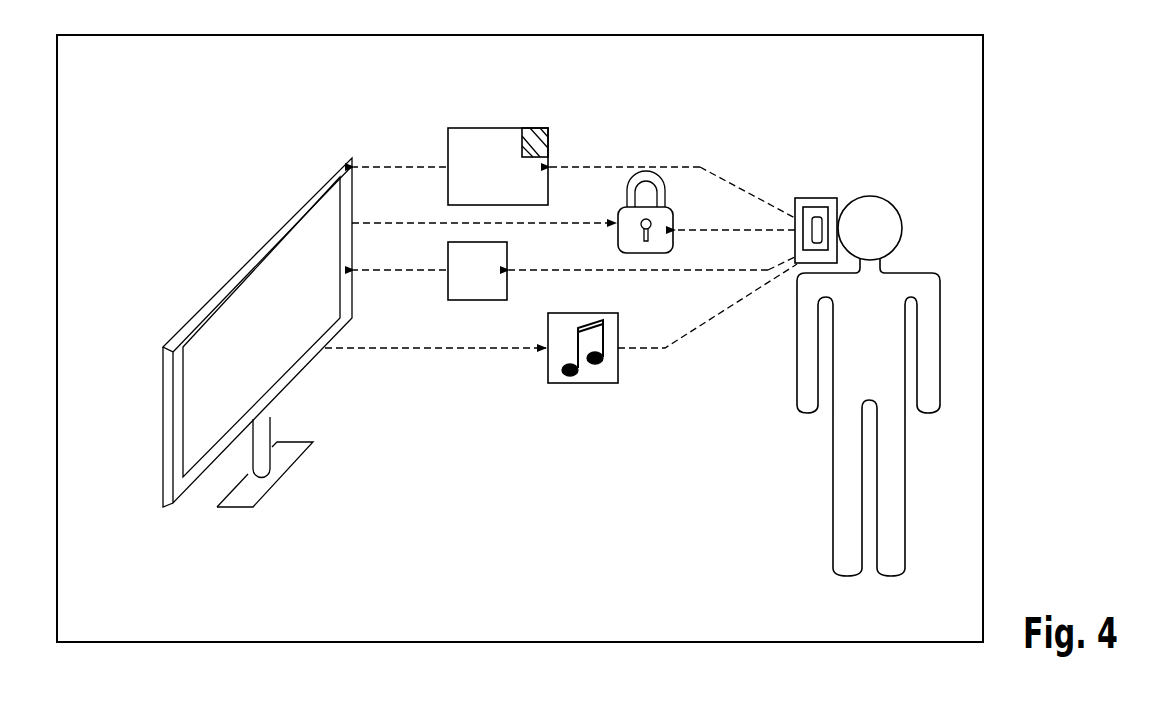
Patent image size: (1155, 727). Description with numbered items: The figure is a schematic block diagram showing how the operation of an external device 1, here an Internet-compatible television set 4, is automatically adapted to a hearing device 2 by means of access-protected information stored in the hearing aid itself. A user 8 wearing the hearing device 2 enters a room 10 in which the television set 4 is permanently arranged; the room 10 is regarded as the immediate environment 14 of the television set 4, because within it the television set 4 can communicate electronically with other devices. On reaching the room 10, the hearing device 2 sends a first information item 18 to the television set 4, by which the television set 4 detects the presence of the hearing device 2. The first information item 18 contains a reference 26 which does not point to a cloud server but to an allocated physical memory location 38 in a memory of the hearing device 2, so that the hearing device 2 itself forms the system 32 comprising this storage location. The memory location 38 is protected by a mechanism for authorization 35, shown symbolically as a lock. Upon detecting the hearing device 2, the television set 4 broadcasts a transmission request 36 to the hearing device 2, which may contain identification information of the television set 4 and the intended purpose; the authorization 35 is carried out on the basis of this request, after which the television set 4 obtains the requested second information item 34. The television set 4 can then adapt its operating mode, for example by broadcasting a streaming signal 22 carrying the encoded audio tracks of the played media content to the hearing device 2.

The external device 1 is at (257, 332).
The television set 4 is at (200, 307).
The hearing device 2 is at (853, 176).
The system 32 is at (823, 203).
The user 8 is at (902, 225).
The room 10 is at (985, 185).
The immediate environment 14 is at (942, 109).
The first information item 18 is at (478, 128).
The streaming signal 22 is at (587, 383).
The reference 26 is at (535, 128).
The second information item 34 is at (483, 300).
The mechanism for authorization 35 is at (673, 218).
The transmission request 36 is at (407, 223).
The physical memory location 38 is at (795, 200).